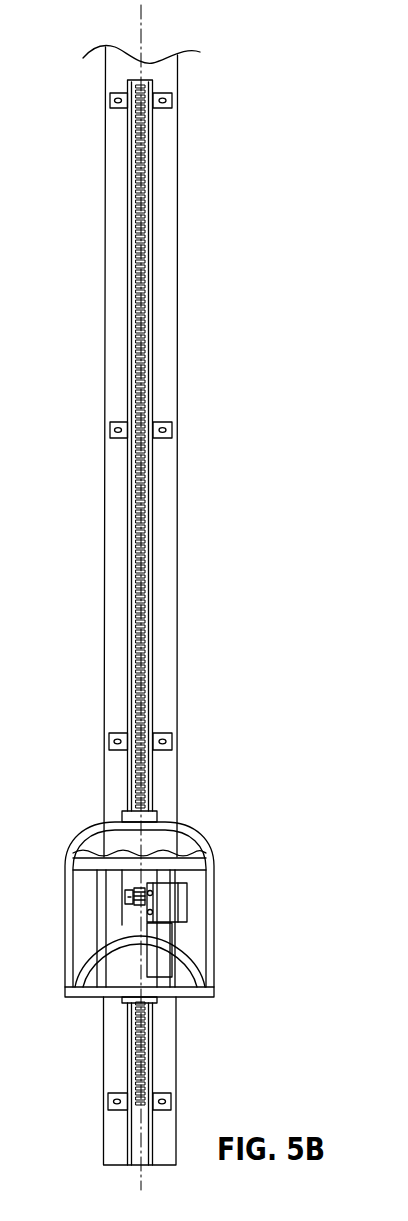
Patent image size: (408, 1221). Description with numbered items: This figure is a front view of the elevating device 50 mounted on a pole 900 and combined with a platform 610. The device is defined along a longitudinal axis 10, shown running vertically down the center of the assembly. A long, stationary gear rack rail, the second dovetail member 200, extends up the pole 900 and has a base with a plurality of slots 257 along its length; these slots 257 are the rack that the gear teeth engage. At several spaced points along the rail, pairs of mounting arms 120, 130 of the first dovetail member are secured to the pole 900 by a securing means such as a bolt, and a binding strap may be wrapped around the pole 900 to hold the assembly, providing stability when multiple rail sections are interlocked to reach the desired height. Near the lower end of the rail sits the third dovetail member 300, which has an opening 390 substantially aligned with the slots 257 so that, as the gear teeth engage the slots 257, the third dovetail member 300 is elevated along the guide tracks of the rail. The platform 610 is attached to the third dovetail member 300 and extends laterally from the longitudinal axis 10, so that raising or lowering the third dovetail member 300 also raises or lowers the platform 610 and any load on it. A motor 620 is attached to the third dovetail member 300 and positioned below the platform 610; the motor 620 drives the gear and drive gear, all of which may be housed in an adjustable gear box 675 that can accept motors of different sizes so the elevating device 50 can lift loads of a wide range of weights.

The longitudinal axis 10 is at (141, 35).
The elevating device 50 is at (258, 508).
The mounting arm 120 is at (110, 106).
The mounting arm 130 is at (172, 98).
The second dovetail member 200 is at (150, 509).
The slots 257 is at (143, 548).
The third dovetail member 300 is at (152, 813).
The opening 390 is at (134, 906).
The platform 610 is at (214, 905).
The motor 620 is at (166, 962).
The gear box 675 is at (170, 905).
The pole 900 is at (177, 227).